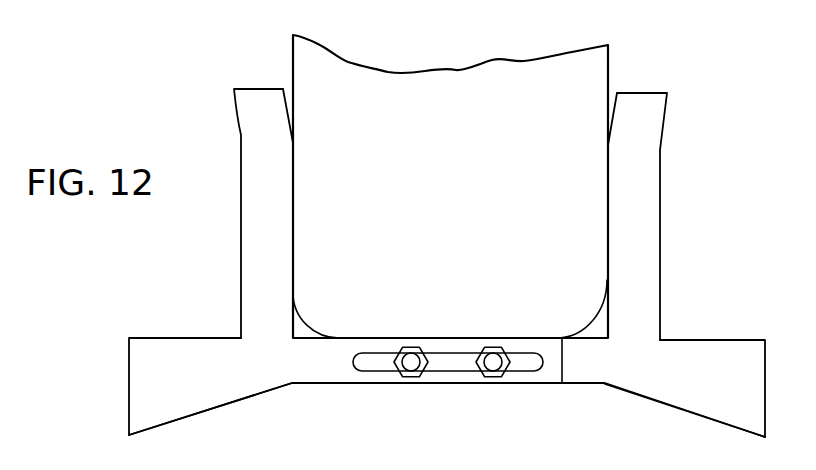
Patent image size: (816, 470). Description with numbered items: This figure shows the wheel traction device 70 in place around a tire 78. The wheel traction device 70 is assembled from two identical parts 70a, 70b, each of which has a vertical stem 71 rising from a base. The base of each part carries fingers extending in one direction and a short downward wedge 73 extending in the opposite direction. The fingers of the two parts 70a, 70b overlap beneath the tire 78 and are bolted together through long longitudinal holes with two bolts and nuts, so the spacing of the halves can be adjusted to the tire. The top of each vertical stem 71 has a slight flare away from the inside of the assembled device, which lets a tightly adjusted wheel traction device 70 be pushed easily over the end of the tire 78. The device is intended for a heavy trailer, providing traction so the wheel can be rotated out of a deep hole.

The tire 78 is at (447, 181).
The vertical stem 71 is at (645, 250).
The short downward wedge 73 is at (726, 395).
The wheel traction device 70 is at (511, 384).
The first identical part 70a is at (232, 404).
The second identical part 70b is at (673, 412).